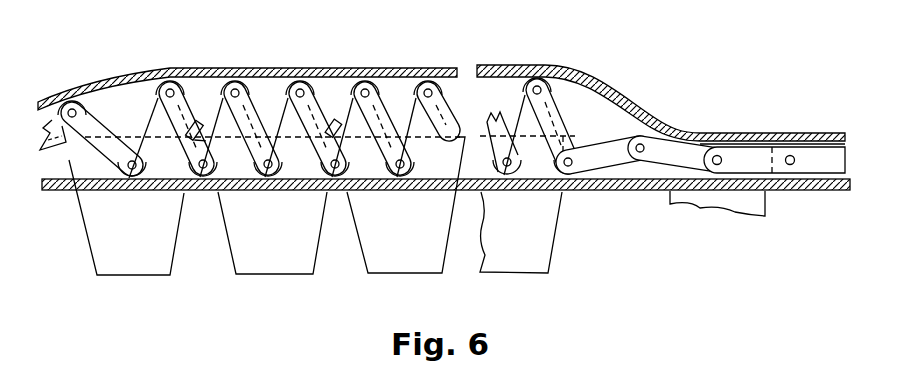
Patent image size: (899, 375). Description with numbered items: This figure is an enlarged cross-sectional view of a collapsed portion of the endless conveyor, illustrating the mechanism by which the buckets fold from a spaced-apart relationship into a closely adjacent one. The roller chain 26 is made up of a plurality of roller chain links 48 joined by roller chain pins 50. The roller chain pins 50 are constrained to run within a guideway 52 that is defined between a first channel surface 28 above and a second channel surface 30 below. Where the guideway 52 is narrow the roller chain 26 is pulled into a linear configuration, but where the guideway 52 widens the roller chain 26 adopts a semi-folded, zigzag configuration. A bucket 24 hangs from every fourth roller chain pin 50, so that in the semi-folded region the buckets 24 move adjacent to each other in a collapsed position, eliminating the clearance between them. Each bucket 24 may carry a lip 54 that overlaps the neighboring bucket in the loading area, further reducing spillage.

The bucket 24 is at (100, 230).
The roller chain 26 is at (672, 150).
The first channel surface 28 is at (442, 67).
The second channel surface 30 is at (585, 187).
The roller chain link 48 is at (153, 112).
The roller chain pin 50 is at (180, 86).
The guideway 52 is at (590, 102).
The lip 54 is at (335, 127).